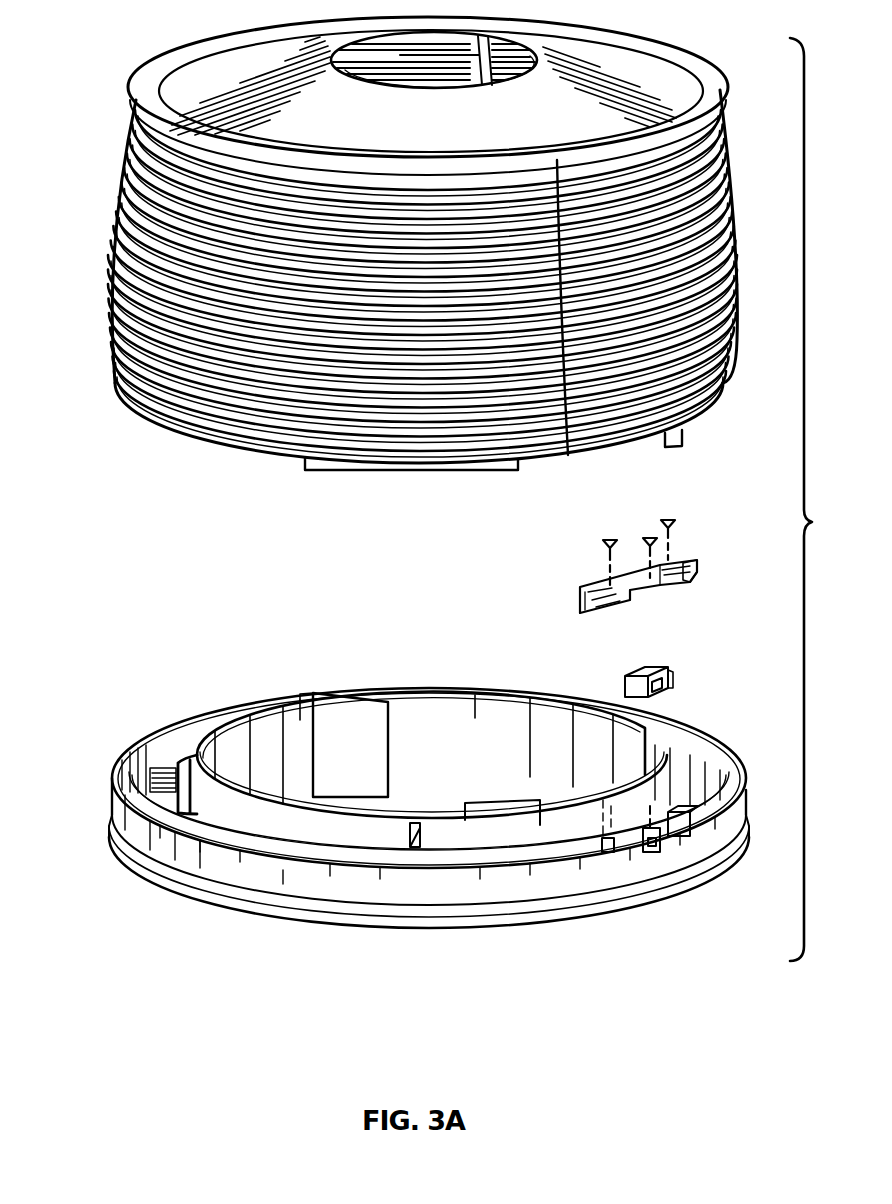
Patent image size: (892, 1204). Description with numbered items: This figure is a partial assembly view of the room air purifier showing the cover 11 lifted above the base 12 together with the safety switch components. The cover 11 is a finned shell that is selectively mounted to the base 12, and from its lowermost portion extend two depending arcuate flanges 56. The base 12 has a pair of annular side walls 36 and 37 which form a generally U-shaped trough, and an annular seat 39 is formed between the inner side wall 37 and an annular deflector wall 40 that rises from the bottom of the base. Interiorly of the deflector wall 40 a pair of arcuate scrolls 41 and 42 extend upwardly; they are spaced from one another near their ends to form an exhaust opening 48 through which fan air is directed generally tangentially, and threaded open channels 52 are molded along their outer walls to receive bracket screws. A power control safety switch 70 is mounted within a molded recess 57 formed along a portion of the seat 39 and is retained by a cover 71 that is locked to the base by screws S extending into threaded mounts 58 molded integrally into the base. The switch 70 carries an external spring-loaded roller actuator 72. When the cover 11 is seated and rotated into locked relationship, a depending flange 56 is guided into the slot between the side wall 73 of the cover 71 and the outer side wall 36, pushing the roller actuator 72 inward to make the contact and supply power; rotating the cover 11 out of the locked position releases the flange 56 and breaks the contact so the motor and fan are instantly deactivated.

The cover 11 is at (705, 72).
The depending arcuate flanges 56 is at (330, 472).
The screws S is at (676, 525).
The cover 71 is at (582, 590).
The side wall 73 is at (656, 600).
The power control safety switch 70 is at (640, 672).
The roller actuator 72 is at (672, 688).
The base 12 is at (417, 808).
The side wall 36 is at (740, 805).
The side wall 37 is at (742, 778).
The exhaust opening 48 is at (170, 856).
The scroll 42 is at (478, 700).
The scroll 41 is at (292, 722).
The annular deflector wall 40 is at (190, 762).
The annular seat 39 is at (167, 758).
The threaded open channels 52 is at (414, 847).
The threaded mounts 58 is at (607, 852).
The molded recess 57 is at (648, 852).